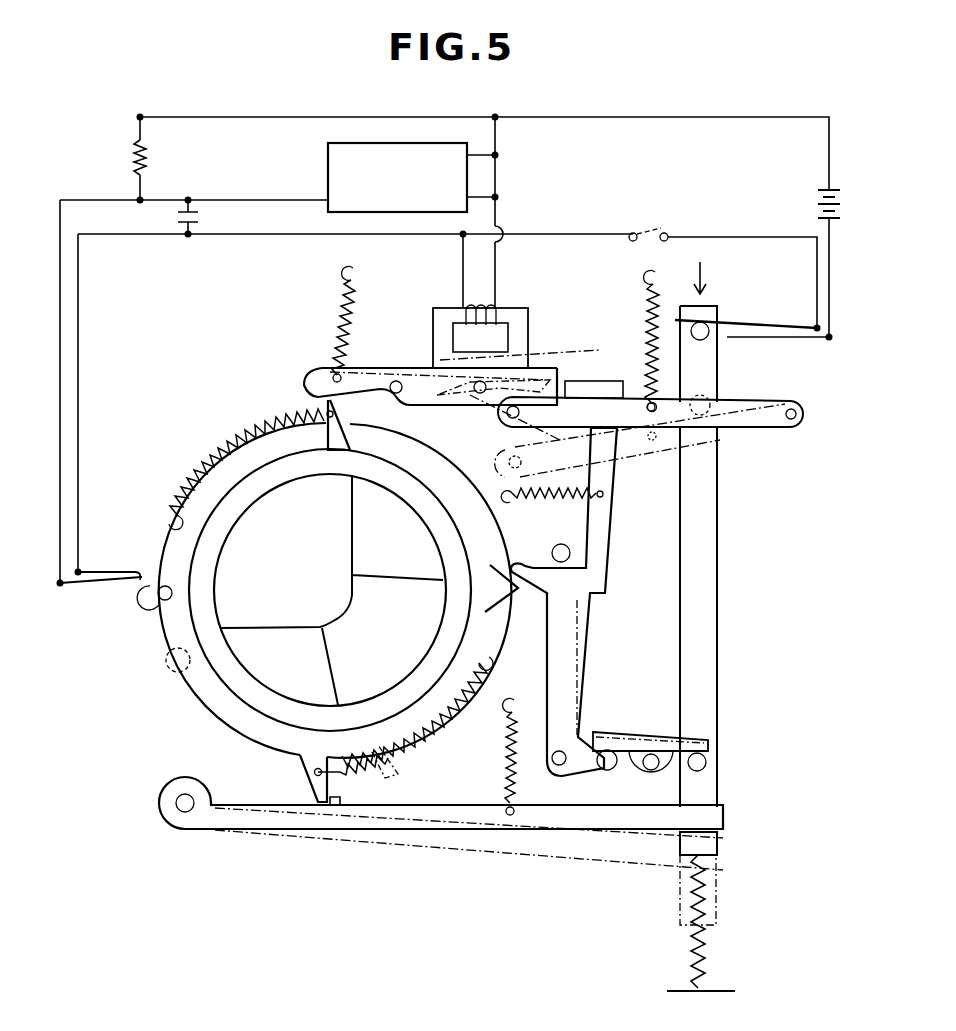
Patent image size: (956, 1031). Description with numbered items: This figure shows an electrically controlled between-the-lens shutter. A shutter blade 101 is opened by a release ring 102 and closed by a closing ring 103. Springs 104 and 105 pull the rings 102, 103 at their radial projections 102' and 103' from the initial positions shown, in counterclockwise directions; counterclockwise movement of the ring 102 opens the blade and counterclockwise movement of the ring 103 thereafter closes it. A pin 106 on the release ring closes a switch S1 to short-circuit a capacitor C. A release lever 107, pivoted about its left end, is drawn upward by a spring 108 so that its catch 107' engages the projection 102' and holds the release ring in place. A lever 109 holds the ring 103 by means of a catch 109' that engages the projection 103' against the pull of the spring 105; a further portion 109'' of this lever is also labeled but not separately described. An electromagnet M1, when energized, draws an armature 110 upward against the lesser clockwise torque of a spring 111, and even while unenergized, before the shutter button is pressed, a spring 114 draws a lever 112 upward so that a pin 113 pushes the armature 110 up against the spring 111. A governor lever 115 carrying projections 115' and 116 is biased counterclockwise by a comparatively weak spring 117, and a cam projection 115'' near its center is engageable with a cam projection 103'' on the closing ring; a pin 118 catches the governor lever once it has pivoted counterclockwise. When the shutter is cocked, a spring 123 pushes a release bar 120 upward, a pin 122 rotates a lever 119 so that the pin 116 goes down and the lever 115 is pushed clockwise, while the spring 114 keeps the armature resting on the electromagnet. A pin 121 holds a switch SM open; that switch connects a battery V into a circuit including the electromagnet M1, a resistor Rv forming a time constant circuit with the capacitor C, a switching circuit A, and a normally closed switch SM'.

The shutter blade 101 is at (246, 658).
The release ring 102 is at (335, 612).
The radial projection 102' is at (282, 785).
The closing ring 103 is at (141, 668).
The radial projection 103' is at (274, 424).
The cam projection 103'' is at (417, 780).
The spring 104 is at (360, 776).
The spring 105 is at (206, 476).
The pin 106 is at (158, 606).
The release lever 107 is at (441, 841).
The catch 107' is at (304, 852).
The spring 108 is at (508, 816).
The lever 109 is at (423, 394).
The catch 109' is at (297, 386).
The lever end 109'' is at (593, 368).
The armature 110 is at (438, 356).
The spring 111 is at (344, 308).
The lever 112 is at (748, 404).
The pin 113 is at (484, 400).
The spring 114 is at (644, 298).
The governor lever 115 is at (589, 602).
The projection 115' is at (609, 378).
The cam projection 115'' is at (513, 568).
The pin 116 is at (606, 770).
The spring 117 is at (606, 490).
The pin 118 is at (570, 552).
The lever 119 is at (700, 743).
The release bar 120 is at (712, 600).
The pin 121 is at (706, 324).
The pin 122 is at (707, 762).
The spring 123 is at (705, 945).
The resistor Rv is at (137, 162).
The capacitor C is at (199, 217).
The switching circuit A is at (397, 177).
The battery V is at (838, 204).
The switch SM is at (746, 322).
The normally closed switch SM' is at (656, 219).
The electromagnet M1 is at (481, 324).
The switch S1 is at (101, 595).